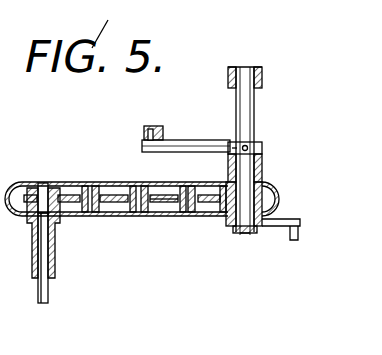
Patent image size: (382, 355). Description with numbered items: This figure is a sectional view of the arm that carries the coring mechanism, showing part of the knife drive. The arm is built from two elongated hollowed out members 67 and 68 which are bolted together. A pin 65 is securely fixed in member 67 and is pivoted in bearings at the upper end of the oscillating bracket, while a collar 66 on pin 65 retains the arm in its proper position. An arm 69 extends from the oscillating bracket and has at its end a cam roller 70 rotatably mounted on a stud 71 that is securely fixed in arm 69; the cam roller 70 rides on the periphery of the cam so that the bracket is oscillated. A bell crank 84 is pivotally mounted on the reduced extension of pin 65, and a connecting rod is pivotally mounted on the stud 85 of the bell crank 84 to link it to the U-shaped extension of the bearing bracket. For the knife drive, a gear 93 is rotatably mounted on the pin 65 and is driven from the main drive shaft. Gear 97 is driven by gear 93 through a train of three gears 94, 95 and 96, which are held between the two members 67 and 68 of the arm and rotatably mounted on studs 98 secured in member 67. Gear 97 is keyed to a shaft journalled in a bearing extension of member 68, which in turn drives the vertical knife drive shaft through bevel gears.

The pin 65 is at (272, 151).
The collar 66 is at (273, 148).
The elongated hollowed out member 67 is at (116, 180).
The elongated hollowed out member 68 is at (71, 258).
The arm 69 is at (186, 125).
The cam roller 70 is at (123, 118).
The stud 71 is at (163, 111).
The bell crank 84 is at (271, 253).
The stud 85 is at (305, 255).
The gear 93 is at (290, 187).
The gear 94 is at (188, 233).
The gear 95 is at (166, 227).
The gear 96 is at (119, 227).
The gear 97 is at (59, 207).
The studs 98 is at (110, 177).